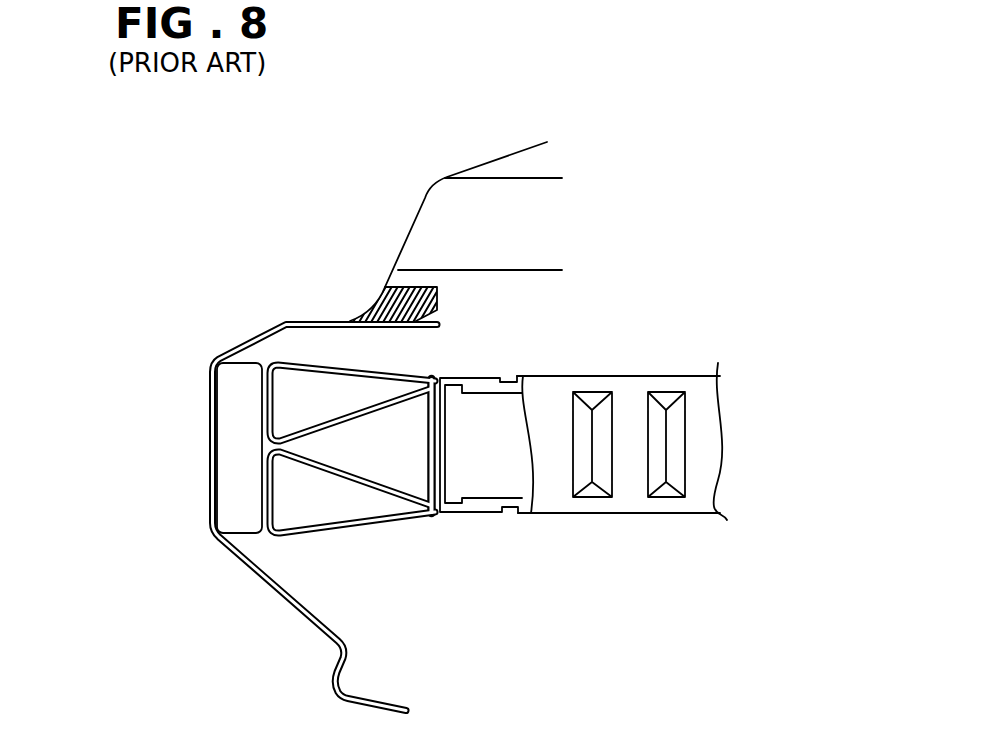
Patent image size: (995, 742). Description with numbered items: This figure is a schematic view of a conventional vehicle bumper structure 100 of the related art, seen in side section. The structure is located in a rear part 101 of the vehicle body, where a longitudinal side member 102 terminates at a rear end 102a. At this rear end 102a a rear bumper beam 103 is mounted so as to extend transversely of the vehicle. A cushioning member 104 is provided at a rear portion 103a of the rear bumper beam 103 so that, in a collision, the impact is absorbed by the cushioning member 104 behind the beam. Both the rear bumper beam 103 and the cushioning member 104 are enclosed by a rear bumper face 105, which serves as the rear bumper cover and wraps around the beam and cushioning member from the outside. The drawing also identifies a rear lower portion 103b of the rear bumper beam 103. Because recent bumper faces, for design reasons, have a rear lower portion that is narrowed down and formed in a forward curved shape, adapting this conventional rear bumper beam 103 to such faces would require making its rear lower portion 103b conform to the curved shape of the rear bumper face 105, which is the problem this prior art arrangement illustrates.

The vehicle bumper structure 100 is at (250, 413).
The rear part of the vehicle body 101 is at (430, 207).
The side member 102 is at (583, 487).
The rear end of the side member 102a is at (532, 507).
The rear bumper beam 103 is at (250, 462).
The rear portion of the rear bumper beam 103a is at (263, 403).
The rear lower portion of the rear bumper beam 103b is at (263, 510).
The cushioning member 104 is at (225, 473).
The rear bumper face 105 is at (237, 357).